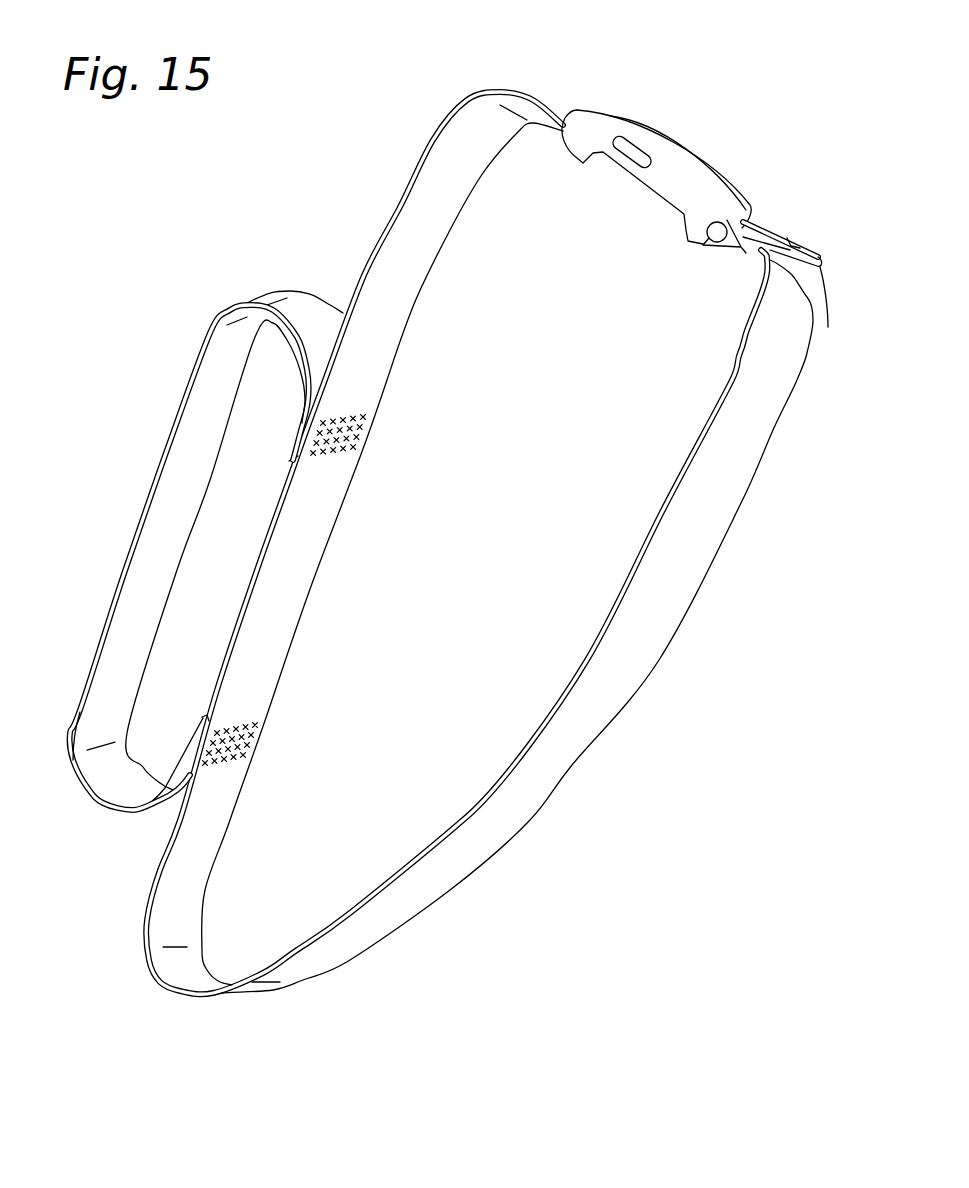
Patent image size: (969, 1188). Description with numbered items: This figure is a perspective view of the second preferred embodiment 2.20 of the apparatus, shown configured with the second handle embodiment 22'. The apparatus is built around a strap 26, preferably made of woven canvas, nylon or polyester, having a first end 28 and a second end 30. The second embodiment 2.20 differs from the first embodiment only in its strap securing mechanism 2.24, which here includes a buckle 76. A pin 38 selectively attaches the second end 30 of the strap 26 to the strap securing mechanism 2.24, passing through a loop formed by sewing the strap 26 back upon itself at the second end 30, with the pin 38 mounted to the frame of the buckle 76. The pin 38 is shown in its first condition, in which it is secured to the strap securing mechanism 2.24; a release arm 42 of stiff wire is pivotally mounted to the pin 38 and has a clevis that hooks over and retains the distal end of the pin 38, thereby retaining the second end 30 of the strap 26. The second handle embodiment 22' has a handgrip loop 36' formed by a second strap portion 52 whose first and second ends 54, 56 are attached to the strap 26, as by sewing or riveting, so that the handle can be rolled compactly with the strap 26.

The second embodiment of the apparatus 2.20 is at (374, 150).
The strap securing mechanism 2.24 is at (719, 113).
The second handle embodiment 22' is at (215, 500).
The strap 26 is at (615, 684).
The first end 28 is at (820, 258).
The second end 30 is at (821, 312).
The handgrip loop 36' is at (189, 557).
The pin 38 is at (710, 240).
The release arm 42 is at (733, 258).
The second strap portion 52 is at (128, 553).
The first end 54 is at (187, 734).
The second end 56 is at (298, 442).
The buckle 76 is at (664, 90).